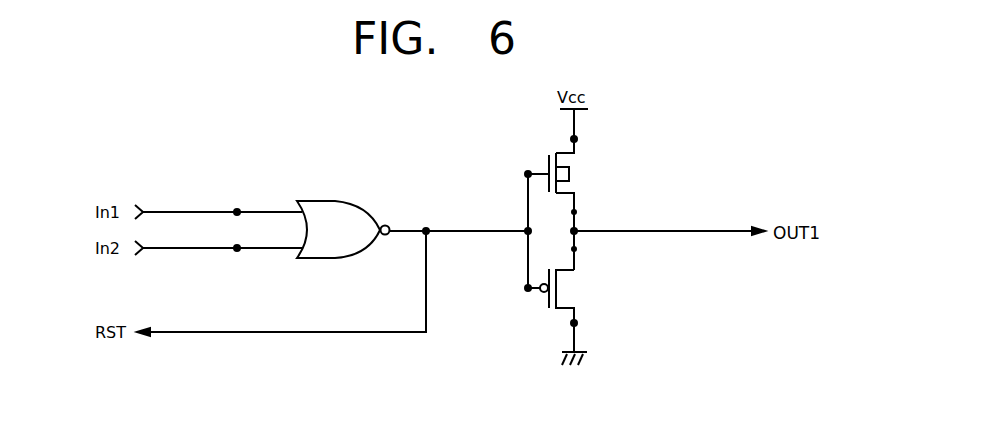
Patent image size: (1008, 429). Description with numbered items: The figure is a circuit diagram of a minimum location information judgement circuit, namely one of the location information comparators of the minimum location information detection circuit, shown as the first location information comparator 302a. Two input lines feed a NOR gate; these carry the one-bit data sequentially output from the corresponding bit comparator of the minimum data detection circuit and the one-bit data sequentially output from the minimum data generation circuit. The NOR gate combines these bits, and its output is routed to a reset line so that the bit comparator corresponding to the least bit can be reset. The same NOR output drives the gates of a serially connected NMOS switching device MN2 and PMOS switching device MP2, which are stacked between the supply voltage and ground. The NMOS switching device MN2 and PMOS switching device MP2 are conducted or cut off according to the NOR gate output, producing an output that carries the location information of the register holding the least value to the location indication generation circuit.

The first location information comparator 302a is at (351, 211).
The NMOS switching device MN2 is at (579, 189).
The PMOS switching device MP2 is at (578, 310).